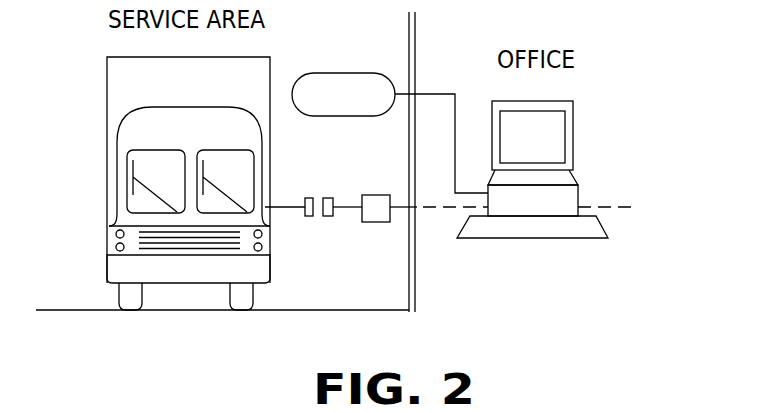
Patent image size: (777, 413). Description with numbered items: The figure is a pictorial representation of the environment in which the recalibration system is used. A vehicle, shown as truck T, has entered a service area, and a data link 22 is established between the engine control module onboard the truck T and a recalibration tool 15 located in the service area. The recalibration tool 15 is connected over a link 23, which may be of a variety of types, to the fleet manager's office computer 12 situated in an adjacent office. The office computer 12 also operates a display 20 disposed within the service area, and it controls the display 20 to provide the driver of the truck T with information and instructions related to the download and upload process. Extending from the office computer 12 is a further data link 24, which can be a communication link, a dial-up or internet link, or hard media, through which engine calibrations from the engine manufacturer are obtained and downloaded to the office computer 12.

The truck T is at (107, 110).
The display 20 is at (331, 72).
The data link 22 is at (326, 182).
The recalibration tool 15 is at (375, 223).
The link 23 is at (427, 210).
The office computer 12 is at (580, 194).
The data link 24 is at (620, 210).